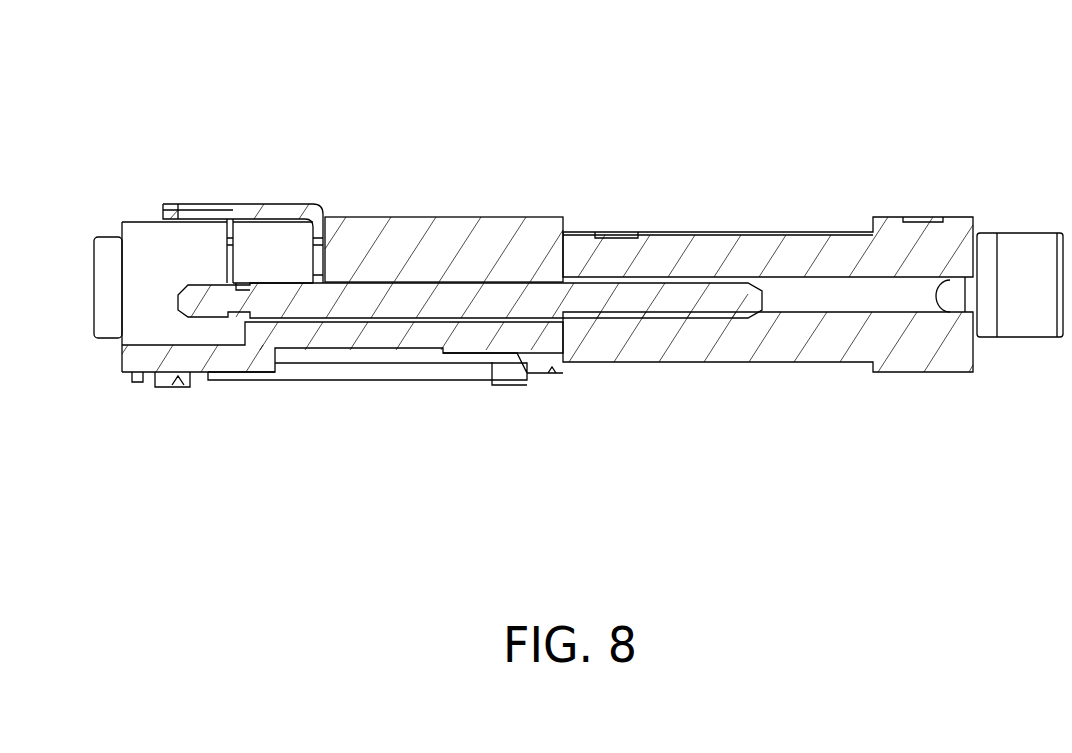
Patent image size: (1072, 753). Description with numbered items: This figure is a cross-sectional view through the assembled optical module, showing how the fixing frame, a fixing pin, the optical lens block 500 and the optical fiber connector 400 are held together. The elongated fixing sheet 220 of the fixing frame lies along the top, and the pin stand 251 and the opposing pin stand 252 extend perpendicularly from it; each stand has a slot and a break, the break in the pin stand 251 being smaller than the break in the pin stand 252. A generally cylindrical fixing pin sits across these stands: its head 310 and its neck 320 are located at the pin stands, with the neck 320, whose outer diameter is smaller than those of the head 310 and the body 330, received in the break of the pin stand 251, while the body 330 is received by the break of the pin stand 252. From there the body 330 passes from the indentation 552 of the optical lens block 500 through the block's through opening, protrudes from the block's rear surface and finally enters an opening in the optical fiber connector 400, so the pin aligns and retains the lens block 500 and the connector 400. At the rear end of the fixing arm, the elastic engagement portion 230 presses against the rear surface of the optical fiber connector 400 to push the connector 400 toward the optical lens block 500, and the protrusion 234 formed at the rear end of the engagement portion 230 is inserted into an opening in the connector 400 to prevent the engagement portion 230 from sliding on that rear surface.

The head 310 is at (198, 305).
The fixing sheet 220 is at (293, 207).
The pin stand 251 is at (232, 262).
The pin stand 252 is at (318, 258).
The indentation 552 is at (272, 250).
The neck 320 is at (242, 287).
The optical lens block 500 is at (485, 218).
The body 330 is at (615, 295).
The optical fiber connector 400 is at (770, 243).
The protrusion 234 is at (952, 298).
The engagement portion 230 is at (1022, 250).